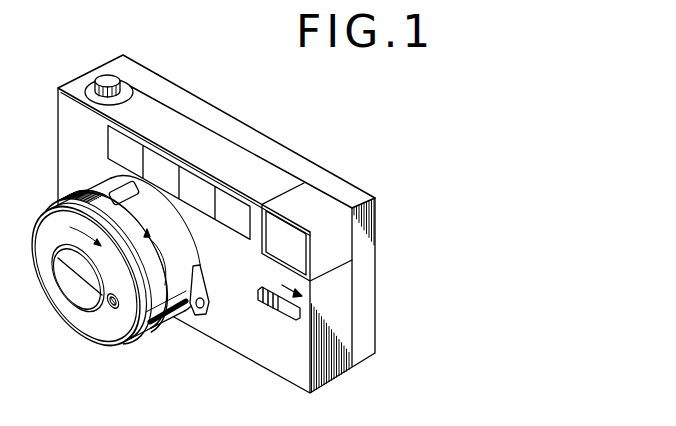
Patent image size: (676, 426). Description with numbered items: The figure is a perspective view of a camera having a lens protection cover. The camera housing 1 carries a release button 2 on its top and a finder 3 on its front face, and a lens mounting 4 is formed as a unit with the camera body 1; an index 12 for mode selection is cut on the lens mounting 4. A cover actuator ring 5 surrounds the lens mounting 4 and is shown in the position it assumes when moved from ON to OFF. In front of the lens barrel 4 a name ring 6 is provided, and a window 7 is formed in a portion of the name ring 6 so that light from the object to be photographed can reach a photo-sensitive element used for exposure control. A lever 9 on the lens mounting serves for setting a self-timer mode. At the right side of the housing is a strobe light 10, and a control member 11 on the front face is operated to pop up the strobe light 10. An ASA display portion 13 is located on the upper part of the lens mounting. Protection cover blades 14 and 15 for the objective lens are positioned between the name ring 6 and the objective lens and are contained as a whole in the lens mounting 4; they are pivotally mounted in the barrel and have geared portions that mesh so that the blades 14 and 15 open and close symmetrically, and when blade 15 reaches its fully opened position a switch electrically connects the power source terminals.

The camera housing 1 is at (225, 110).
The release button 2 is at (100, 77).
The finder 3 is at (200, 190).
The lens mounting 4 is at (95, 198).
The cover actuator ring 5 is at (63, 200).
The name ring 6 is at (50, 300).
The window 7 is at (115, 308).
The lever 9 is at (200, 316).
The strobe light 10 is at (320, 203).
The control member 11 is at (260, 303).
The index 12 is at (163, 319).
The ASA display portion 13 is at (110, 188).
The protection cover blade 14 is at (68, 262).
The protection cover blade 15 is at (82, 293).